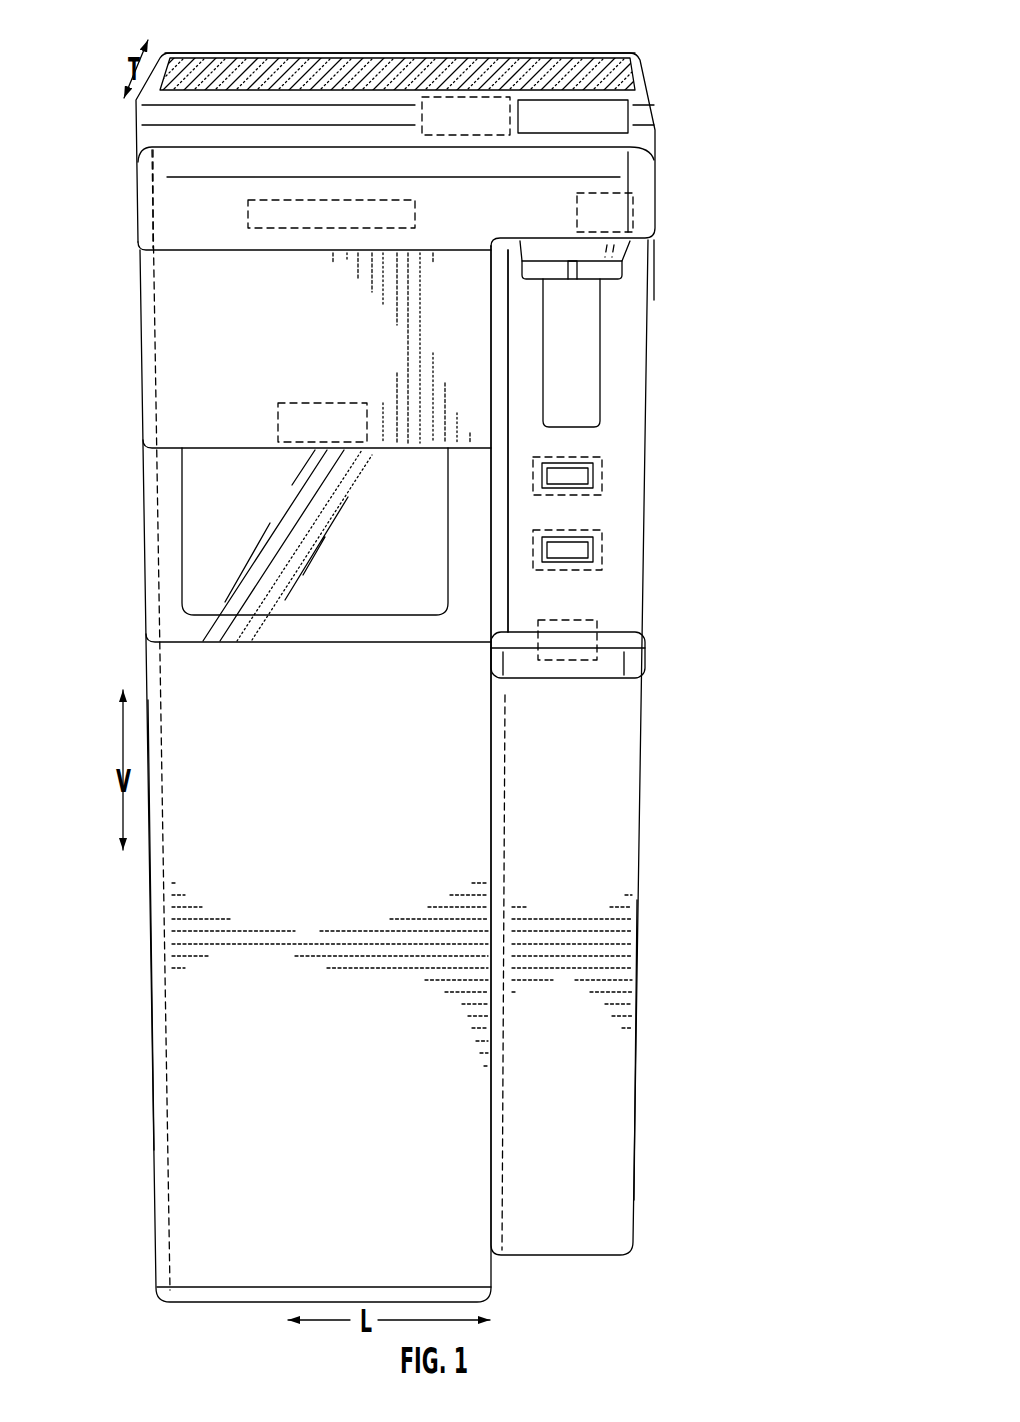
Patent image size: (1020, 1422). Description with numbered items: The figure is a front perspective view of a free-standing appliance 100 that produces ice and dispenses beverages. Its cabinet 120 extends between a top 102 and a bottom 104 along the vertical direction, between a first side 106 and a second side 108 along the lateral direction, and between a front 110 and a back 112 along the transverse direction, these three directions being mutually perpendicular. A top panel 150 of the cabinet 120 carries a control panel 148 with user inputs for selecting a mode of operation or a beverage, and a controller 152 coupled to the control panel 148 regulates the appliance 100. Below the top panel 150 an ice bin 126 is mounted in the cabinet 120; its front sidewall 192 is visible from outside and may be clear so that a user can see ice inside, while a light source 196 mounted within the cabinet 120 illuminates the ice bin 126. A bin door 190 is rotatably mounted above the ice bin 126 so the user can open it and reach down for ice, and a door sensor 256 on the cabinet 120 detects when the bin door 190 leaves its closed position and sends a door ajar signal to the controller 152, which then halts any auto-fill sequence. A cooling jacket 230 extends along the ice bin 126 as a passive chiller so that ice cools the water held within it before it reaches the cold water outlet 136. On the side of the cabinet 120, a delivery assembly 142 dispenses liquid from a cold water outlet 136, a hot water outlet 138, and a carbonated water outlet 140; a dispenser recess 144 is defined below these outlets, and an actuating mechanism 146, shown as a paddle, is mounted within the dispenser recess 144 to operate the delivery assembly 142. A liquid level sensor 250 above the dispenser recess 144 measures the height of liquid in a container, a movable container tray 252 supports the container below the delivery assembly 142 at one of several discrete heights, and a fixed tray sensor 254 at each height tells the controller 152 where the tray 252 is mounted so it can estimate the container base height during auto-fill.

The free-standing appliance 100 is at (750, 816).
The top 102 is at (342, 70).
The bottom 104 is at (209, 1320).
The first side 106 is at (138, 1158).
The second side 108 is at (645, 1072).
The front 110 is at (147, 158).
The back 112 is at (479, 48).
The cabinet 120 is at (152, 932).
The ice bin 126 is at (212, 500).
The cold water outlet 136 is at (600, 290).
The hot water outlet 138 is at (575, 293).
The carbonated water outlet 140 is at (552, 290).
The delivery assembly 142 is at (668, 252).
The dispenser recess 144 is at (630, 425).
The actuating mechanism 146 is at (587, 383).
The control panel 148 is at (615, 118).
The top panel 150 is at (150, 228).
The controller 152 is at (520, 95).
The bin door 190 is at (183, 382).
The front sidewall 192 is at (202, 596).
The light source 196 is at (415, 215).
The cooling jacket 230 is at (165, 553).
The liquid level sensor 250 is at (633, 200).
The movable container tray 252 is at (632, 665).
The fixed tray sensor 254 is at (602, 480).
The door sensor 256 is at (292, 403).